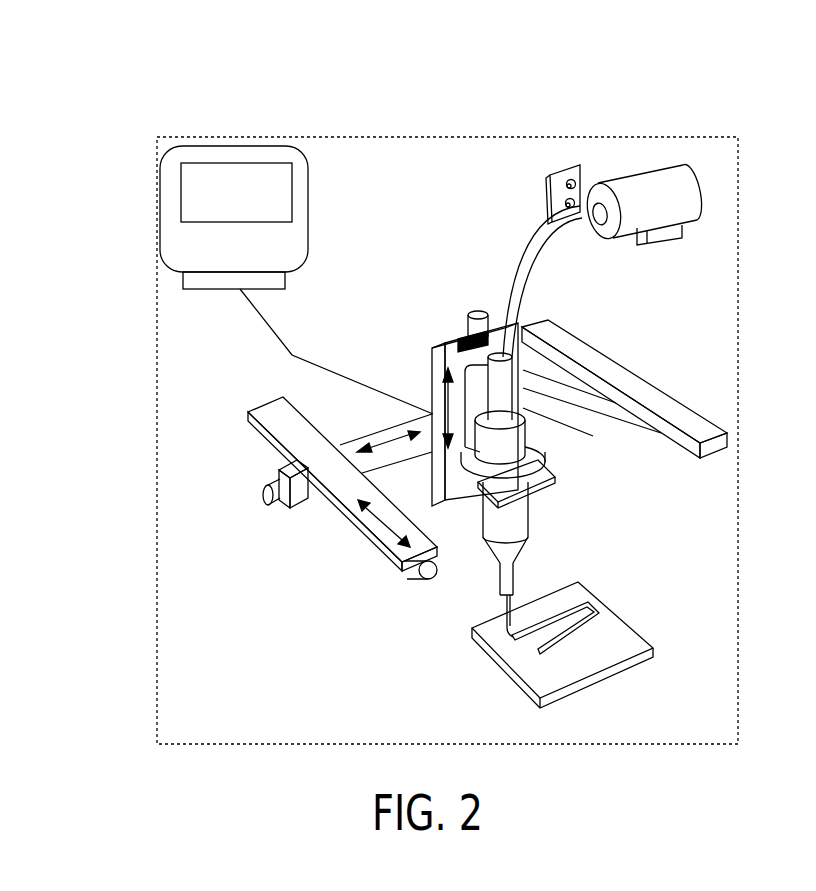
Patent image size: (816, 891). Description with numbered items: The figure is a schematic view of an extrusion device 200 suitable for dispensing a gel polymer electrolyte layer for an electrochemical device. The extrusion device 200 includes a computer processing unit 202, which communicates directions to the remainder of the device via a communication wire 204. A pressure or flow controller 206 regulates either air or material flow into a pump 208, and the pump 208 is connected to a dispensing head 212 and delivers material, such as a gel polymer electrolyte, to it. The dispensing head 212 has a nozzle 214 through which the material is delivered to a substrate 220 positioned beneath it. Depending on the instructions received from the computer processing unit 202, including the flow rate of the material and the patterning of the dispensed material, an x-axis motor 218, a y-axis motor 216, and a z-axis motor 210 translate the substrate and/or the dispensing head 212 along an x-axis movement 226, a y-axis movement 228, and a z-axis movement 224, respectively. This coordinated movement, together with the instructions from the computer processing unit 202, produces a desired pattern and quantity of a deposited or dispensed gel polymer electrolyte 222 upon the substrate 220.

The extrusion device 200 is at (118, 90).
The computer processing unit 202 is at (195, 192).
The communication wire 204 is at (270, 324).
The pressure or flow controller 206 is at (558, 198).
The pump 208 is at (626, 222).
The z-axis motor 210 is at (472, 323).
The dispensing head 212 is at (517, 520).
The nozzle 214 is at (512, 577).
The y-axis motor 216 is at (422, 577).
The x-axis motor 218 is at (263, 497).
The substrate 220 is at (630, 640).
The dispensed gel polymer electrolyte 222 is at (535, 645).
The z-axis movement 224 is at (440, 395).
The x-axis movement 226 is at (386, 440).
The y-axis movement 228 is at (373, 525).